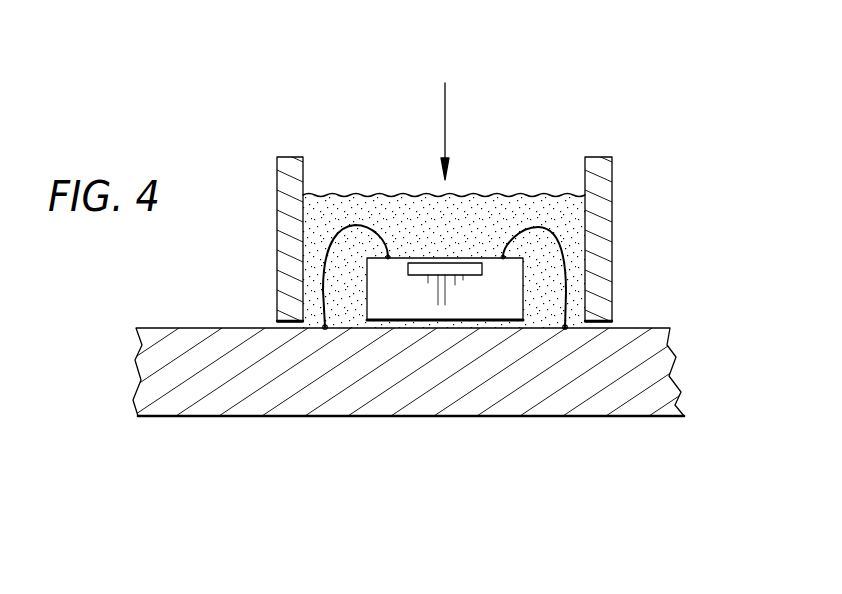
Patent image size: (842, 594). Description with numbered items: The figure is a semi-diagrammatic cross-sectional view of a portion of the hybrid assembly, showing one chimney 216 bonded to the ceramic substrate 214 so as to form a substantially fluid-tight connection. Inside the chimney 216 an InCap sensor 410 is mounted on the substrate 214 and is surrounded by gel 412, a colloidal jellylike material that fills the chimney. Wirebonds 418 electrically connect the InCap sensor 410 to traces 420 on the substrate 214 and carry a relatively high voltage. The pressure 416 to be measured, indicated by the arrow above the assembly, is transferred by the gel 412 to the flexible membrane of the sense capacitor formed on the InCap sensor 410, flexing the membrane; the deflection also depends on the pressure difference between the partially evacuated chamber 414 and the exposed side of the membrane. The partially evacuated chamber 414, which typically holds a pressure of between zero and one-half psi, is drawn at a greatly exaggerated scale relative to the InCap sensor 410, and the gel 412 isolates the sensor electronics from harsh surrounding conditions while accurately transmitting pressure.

The ceramic substrate 214 is at (655, 363).
The chimney 216 is at (612, 180).
The InCap sensor 410 is at (510, 286).
The gel 412 is at (517, 197).
The partially evacuated chamber 414 is at (423, 257).
The pressure 416 is at (445, 100).
The wirebonds 418 is at (563, 297).
The traces 420 is at (325, 330).